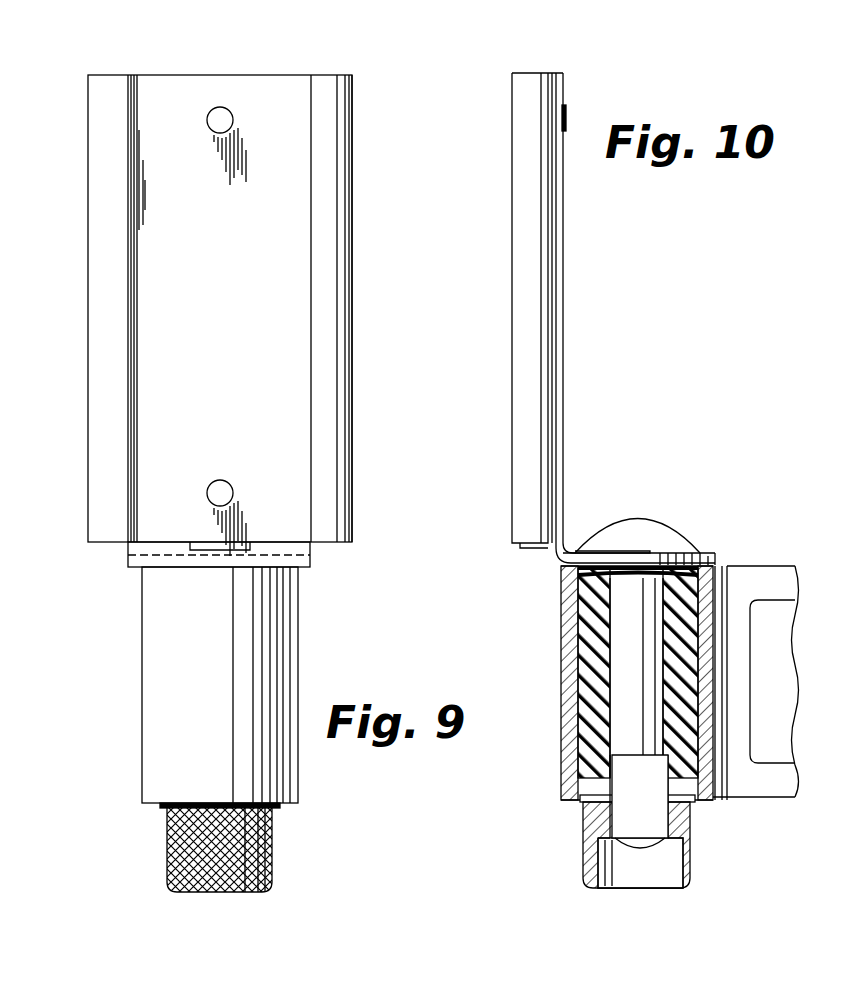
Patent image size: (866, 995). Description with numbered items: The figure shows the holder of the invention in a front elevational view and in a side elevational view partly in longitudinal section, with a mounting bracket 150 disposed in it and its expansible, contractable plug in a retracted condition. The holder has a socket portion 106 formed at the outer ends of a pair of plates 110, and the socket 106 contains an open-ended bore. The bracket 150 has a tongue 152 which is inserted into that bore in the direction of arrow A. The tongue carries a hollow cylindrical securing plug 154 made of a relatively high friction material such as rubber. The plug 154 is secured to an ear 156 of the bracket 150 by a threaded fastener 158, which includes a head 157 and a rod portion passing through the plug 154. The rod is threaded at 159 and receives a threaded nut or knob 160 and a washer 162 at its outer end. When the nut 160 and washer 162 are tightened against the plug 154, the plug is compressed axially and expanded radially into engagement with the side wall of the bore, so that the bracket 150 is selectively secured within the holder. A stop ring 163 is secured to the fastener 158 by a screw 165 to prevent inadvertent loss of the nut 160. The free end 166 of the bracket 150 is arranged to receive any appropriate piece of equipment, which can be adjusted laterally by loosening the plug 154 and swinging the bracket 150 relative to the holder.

In FIG. 9, the socket portion 106 is at (270, 648).
In FIG. 10, the socket portion 106 is at (725, 594).
In FIG. 10, the plate 110 is at (795, 572).
In FIG. 9, the bracket 150 is at (271, 730).
In FIG. 10, the bracket 150 is at (572, 449).
In FIG. 10, the tongue 152 is at (700, 557).
In FIG. 10, the securing plug 154 is at (560, 722).
In FIG. 9, the ear 156 is at (142, 550).
In FIG. 10, the ear 156 is at (585, 562).
In FIG. 10, the head 157 is at (655, 533).
In FIG. 10, the threaded fastener 158 is at (650, 640).
In FIG. 10, the threaded portion 159 is at (583, 807).
In FIG. 9, the nut 160 is at (272, 850).
In FIG. 10, the nut 160 is at (586, 833).
In FIG. 10, the washer 162 is at (695, 800).
In FIG. 10, the stop ring 163 is at (683, 848).
In FIG. 10, the screw 165 is at (583, 873).
In FIG. 9, the free end 166 is at (97, 264).
In FIG. 10, the free end 166 is at (522, 232).
In FIG. 10, the arrow A is at (638, 506).